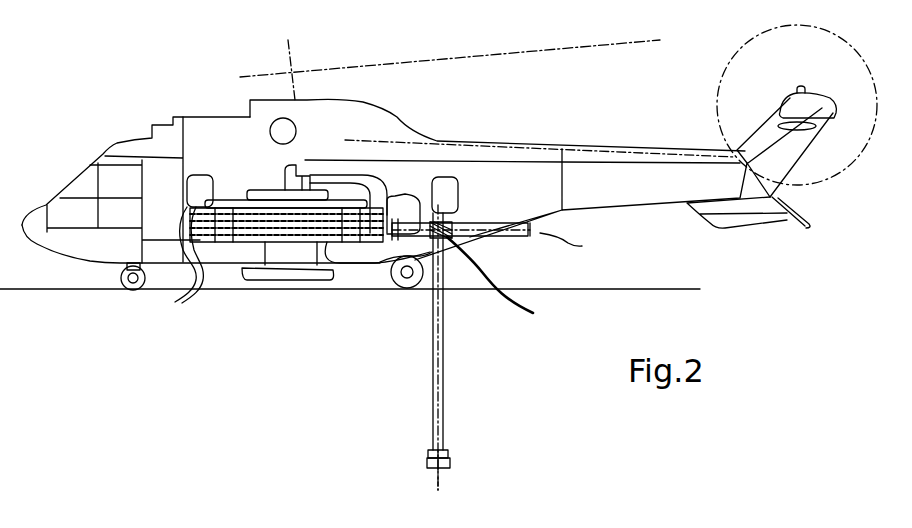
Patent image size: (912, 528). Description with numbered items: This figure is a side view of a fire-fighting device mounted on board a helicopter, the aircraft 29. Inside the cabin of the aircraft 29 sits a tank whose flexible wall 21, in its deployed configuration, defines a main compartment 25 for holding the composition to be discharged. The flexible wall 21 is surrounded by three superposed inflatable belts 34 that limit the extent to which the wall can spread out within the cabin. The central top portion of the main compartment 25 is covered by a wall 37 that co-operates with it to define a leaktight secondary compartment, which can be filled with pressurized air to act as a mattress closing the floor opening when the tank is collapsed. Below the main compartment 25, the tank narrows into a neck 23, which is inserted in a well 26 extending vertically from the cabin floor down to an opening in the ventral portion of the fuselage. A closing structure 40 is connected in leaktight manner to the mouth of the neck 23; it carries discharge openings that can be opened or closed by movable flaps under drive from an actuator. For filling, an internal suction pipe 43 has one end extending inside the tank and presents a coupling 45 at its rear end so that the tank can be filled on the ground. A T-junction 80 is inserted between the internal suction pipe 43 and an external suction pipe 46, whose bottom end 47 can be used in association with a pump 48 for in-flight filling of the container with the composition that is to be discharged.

The aircraft 29 is at (108, 125).
The flexible wall 21 is at (278, 160).
The main compartment 25 is at (233, 192).
The wall 37 is at (257, 190).
The internal suction pipe 43 is at (335, 163).
The inflatable belts 34 is at (181, 271).
The closing structure 40 is at (243, 270).
The neck 23 is at (297, 308).
The well 26 is at (293, 278).
The coupling 45 is at (543, 233).
The external suction pipe 46 is at (447, 338).
The bottom end 47 is at (443, 473).
The pump 48 is at (452, 452).
The T-junction 80 is at (512, 282).